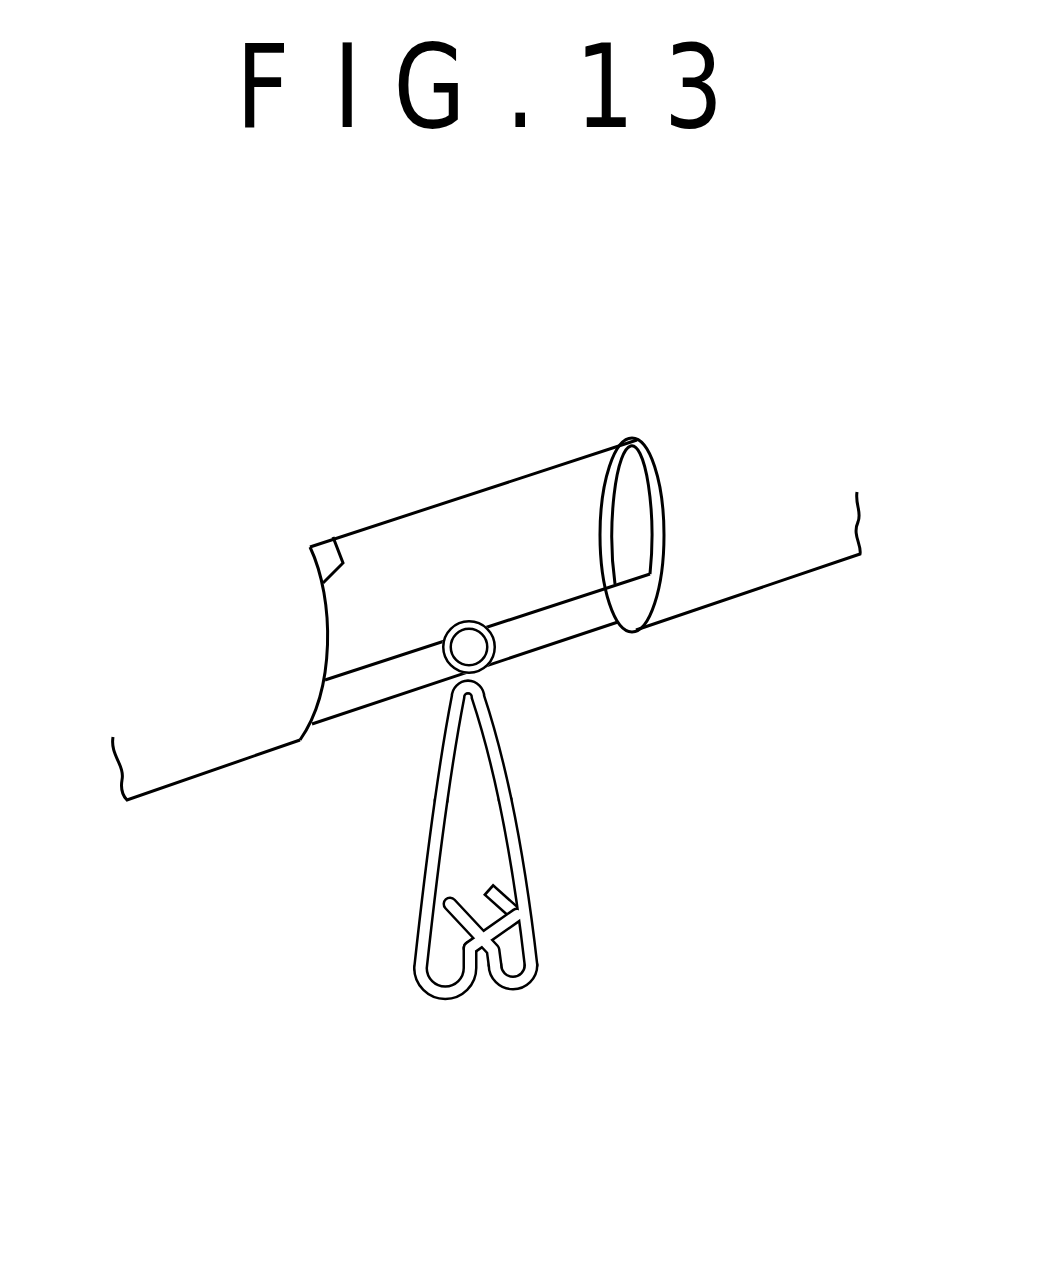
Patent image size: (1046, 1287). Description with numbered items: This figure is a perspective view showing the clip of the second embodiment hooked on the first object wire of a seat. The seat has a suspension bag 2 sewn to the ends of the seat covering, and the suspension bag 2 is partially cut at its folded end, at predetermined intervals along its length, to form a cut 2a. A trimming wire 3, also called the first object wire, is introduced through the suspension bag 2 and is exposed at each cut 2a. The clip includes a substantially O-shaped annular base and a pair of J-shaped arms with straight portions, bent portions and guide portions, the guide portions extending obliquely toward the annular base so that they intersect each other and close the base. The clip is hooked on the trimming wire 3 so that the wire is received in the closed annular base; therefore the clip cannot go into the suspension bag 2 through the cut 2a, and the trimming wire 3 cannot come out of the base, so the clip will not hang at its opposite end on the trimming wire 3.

The suspension bag 2 is at (186, 803).
The cut 2a is at (333, 537).
The trimming wire 3 is at (399, 670).